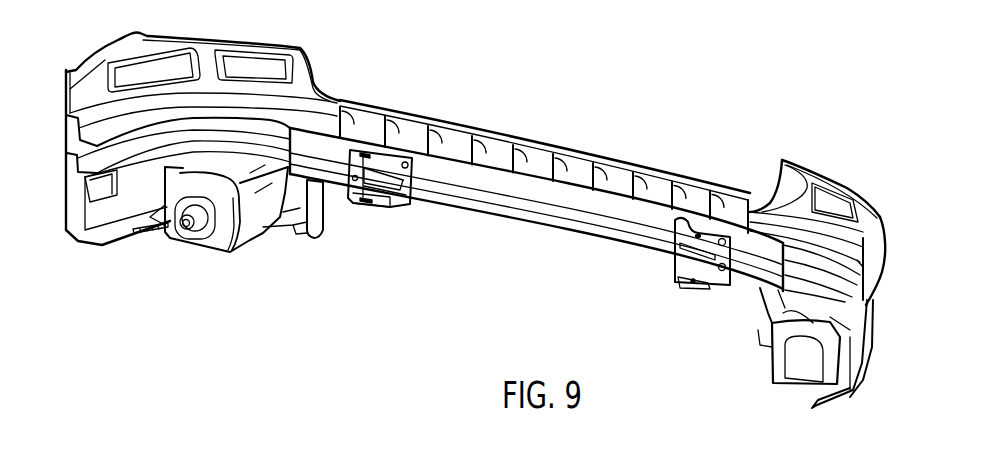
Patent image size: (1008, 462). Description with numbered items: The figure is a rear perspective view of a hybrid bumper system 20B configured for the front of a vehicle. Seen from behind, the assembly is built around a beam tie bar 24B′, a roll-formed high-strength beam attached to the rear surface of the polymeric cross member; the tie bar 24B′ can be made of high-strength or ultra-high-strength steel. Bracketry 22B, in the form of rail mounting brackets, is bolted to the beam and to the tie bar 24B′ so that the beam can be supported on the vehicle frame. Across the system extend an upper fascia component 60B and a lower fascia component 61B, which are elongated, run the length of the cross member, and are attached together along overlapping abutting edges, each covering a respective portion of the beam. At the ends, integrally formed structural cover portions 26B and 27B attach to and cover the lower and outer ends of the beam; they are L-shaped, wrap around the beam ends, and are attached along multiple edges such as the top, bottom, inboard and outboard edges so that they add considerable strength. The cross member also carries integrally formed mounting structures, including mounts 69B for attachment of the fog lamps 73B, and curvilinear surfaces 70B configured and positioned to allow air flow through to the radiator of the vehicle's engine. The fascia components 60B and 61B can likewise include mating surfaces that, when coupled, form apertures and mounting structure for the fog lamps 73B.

The hybrid bumper system 20B is at (662, 66).
The upper fascia component 60B is at (306, 50).
The curvilinear surfaces 70B is at (313, 78).
The structural cover portion 27B is at (70, 204).
The beam tie bar 24B′ is at (585, 222).
The bracketry 22B is at (388, 212).
The lower fascia component 61B is at (317, 228).
The fog lamps 73B is at (193, 228).
The mounts 69B is at (150, 232).
The structural cover portion 26B is at (855, 383).